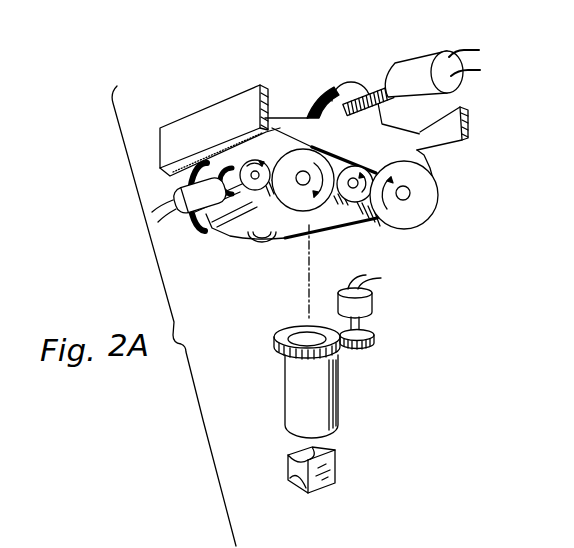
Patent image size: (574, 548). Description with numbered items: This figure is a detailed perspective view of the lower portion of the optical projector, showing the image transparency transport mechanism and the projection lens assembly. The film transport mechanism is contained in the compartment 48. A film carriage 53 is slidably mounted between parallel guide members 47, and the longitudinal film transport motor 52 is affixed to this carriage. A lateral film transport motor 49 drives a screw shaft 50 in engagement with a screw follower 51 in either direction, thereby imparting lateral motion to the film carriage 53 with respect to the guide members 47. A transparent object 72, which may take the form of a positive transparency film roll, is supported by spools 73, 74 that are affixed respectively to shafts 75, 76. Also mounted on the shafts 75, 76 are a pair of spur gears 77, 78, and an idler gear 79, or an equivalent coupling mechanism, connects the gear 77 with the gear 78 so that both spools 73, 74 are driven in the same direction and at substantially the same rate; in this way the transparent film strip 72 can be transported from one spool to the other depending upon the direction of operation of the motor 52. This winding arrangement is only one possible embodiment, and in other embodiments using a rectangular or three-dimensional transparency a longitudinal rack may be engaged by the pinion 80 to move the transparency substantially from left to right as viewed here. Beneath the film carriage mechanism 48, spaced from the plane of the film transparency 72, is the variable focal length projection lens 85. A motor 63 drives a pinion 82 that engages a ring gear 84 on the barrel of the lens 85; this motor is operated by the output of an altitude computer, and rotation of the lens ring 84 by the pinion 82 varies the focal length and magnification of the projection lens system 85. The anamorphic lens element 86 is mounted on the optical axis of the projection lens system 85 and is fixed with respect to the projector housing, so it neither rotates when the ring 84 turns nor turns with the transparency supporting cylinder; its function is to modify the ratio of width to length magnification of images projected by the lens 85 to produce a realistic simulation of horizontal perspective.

The guide members 47 is at (183, 121).
The compartment 48 is at (465, 171).
The lateral film transport motor 49 is at (427, 53).
The screw shaft 50 is at (379, 90).
The screw follower 51 is at (352, 82).
The longitudinal film transport motor 52 is at (187, 222).
The film carriage 53 is at (333, 88).
The motor 63 is at (368, 305).
The transparent object 72 is at (288, 230).
The spool 73 is at (257, 255).
The spool 74 is at (210, 240).
The shaft 75 is at (403, 200).
The shaft 76 is at (299, 174).
The spur gear 77 is at (422, 192).
The spur gear 78 is at (312, 147).
The idler gear 79 is at (348, 225).
The pinion 80 is at (252, 192).
The pinion 82 is at (374, 342).
The ring gear 84 is at (274, 345).
The variable focal length projection lens 85 is at (285, 403).
The anamorphic lens element 86 is at (287, 468).